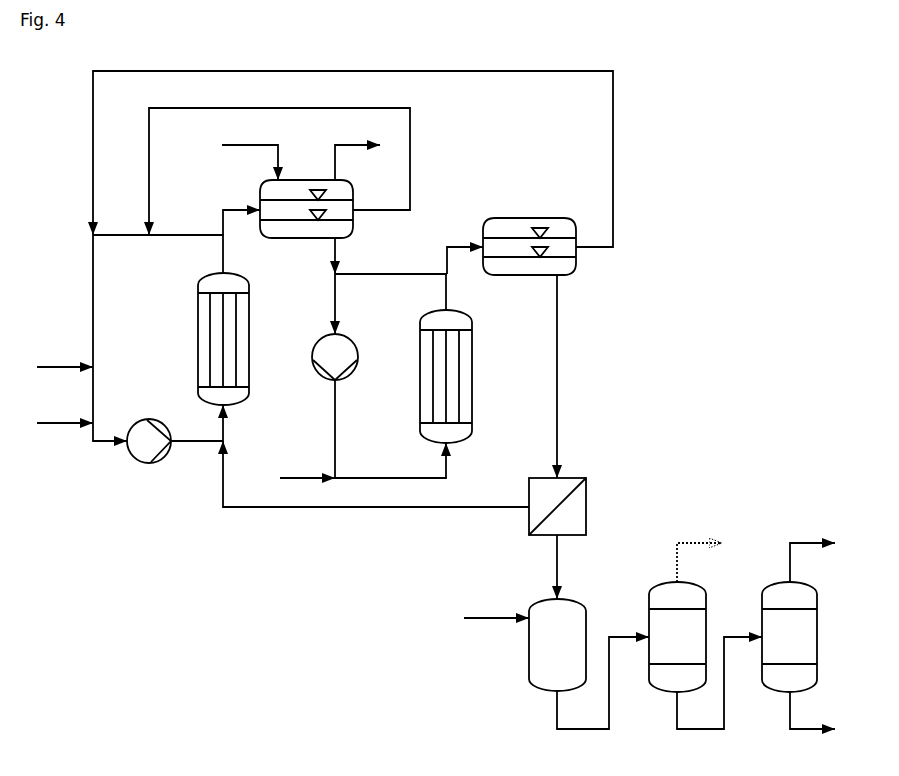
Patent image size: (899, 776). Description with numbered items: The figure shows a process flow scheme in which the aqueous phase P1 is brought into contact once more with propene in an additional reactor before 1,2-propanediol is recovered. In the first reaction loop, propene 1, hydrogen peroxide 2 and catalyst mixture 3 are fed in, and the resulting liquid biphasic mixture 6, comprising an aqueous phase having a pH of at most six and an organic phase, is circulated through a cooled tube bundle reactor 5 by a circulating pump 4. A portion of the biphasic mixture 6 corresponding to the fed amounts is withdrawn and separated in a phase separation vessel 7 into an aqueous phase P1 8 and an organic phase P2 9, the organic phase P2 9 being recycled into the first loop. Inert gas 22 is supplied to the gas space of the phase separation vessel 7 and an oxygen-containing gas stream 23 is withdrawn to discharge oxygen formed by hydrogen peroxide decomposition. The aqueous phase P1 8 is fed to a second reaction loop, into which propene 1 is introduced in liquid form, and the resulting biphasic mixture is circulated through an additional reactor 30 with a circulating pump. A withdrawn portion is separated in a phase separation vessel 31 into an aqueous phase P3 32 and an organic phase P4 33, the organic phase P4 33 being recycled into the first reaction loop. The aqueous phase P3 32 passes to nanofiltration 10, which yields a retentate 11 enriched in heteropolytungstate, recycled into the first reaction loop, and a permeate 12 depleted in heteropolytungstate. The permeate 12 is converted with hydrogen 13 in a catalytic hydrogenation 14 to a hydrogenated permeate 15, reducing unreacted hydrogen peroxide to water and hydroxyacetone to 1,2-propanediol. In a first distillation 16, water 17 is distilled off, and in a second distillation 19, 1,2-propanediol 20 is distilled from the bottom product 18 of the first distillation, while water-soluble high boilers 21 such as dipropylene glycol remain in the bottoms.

The propene 1 is at (363, 460).
The hydrogen peroxide 2 is at (65, 353).
The catalyst mixture 3 is at (65, 409).
The circulating pump 4 is at (158, 368).
The cooled tube bundle reactor 5 is at (237, 339).
The liquid biphasic mixture 6 is at (176, 241).
The phase separation vessel 7 is at (306, 224).
The aqueous phase P1 8 is at (378, 358).
The organic phase P2 9 is at (279, 173).
The nanofiltration 10 is at (575, 506).
The retentate 11 is at (376, 487).
The permeate 12 is at (572, 567).
The hydrogen 13 is at (496, 604).
The catalytic hydrogenation 14 is at (544, 655).
The hydrogenated permeate 15 is at (603, 698).
The first distillation 16 is at (667, 646).
The water 17 is at (699, 549).
The bottom product 18 is at (719, 698).
The second distillation 19 is at (779, 646).
The 1,2-propanediol 20 is at (812, 549).
The water-soluble high boilers 21 is at (812, 725).
The inert gas 22 is at (245, 162).
The oxygen-containing gas stream 23 is at (358, 162).
The additional reactor 30 is at (463, 358).
The phase separation vessel 31 is at (511, 261).
The aqueous phase P3 32 is at (576, 376).
The organic phase P4 33 is at (368, 159).